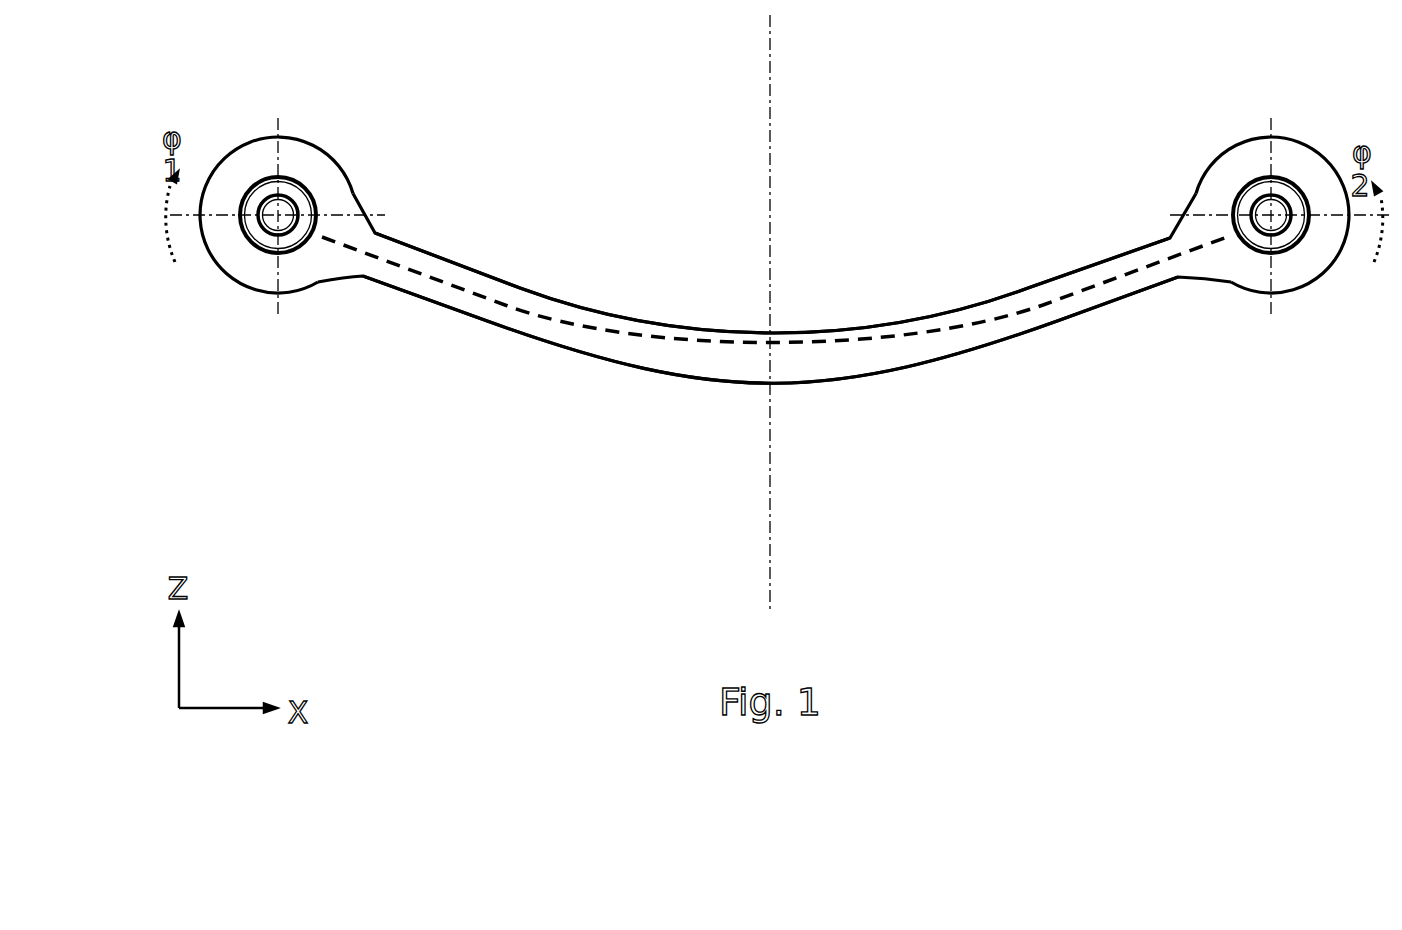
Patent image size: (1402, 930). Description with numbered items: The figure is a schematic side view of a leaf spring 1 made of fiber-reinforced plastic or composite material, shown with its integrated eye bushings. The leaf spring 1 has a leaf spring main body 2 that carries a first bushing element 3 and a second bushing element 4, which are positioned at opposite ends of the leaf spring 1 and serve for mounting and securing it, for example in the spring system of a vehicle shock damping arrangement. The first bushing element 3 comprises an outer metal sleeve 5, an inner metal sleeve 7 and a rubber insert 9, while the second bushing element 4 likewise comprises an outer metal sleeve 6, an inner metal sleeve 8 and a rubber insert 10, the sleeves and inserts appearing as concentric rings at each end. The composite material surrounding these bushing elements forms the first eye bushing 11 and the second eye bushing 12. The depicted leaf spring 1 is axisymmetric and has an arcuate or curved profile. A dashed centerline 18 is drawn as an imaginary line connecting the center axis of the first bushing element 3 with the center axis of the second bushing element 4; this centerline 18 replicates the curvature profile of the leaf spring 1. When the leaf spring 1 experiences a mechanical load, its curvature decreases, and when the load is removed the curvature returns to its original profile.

The leaf spring 1 is at (780, 269).
The leaf spring main body 2 is at (968, 315).
The first bushing element 3 is at (248, 156).
The second bushing element 4 is at (1297, 155).
The outer metal sleeve 5 is at (300, 183).
The outer metal sleeve 6 is at (1248, 180).
The inner metal sleeve 7 is at (290, 237).
The inner metal sleeve 8 is at (1265, 233).
The rubber insert 9 is at (262, 242).
The rubber insert 10 is at (1285, 248).
The first eye bushing 11 is at (262, 351).
The second eye bushing 12 is at (1296, 361).
The dashed centerline 18 is at (774, 357).